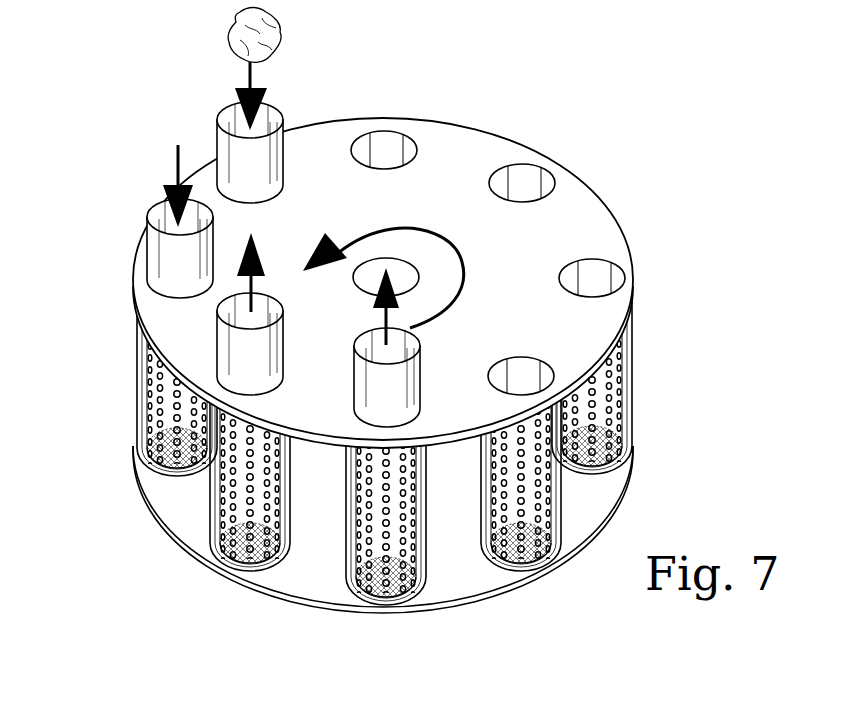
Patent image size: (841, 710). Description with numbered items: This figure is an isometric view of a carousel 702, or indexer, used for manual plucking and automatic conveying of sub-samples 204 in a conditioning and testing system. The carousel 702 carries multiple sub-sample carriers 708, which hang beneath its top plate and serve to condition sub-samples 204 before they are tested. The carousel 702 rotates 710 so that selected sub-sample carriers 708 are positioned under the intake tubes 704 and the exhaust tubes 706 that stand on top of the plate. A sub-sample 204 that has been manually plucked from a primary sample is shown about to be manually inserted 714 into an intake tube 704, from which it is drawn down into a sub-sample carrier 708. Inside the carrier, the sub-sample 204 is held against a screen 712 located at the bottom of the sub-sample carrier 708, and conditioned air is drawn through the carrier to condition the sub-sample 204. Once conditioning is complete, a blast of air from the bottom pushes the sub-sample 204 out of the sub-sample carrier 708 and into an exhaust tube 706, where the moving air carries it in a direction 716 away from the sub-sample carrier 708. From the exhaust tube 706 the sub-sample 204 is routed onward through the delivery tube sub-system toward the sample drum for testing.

The sub-sample 204 is at (233, 44).
The carousel 702 is at (636, 285).
The intake tube 704 is at (220, 143).
The exhaust tube 706 is at (284, 350).
The sub-sample carrier 708 is at (140, 395).
The rotation of the carousel 710 is at (385, 229).
The screen 712 is at (215, 555).
The manual insertion direction 714 is at (252, 82).
The direction away from the sub-sample carrier 716 is at (254, 288).